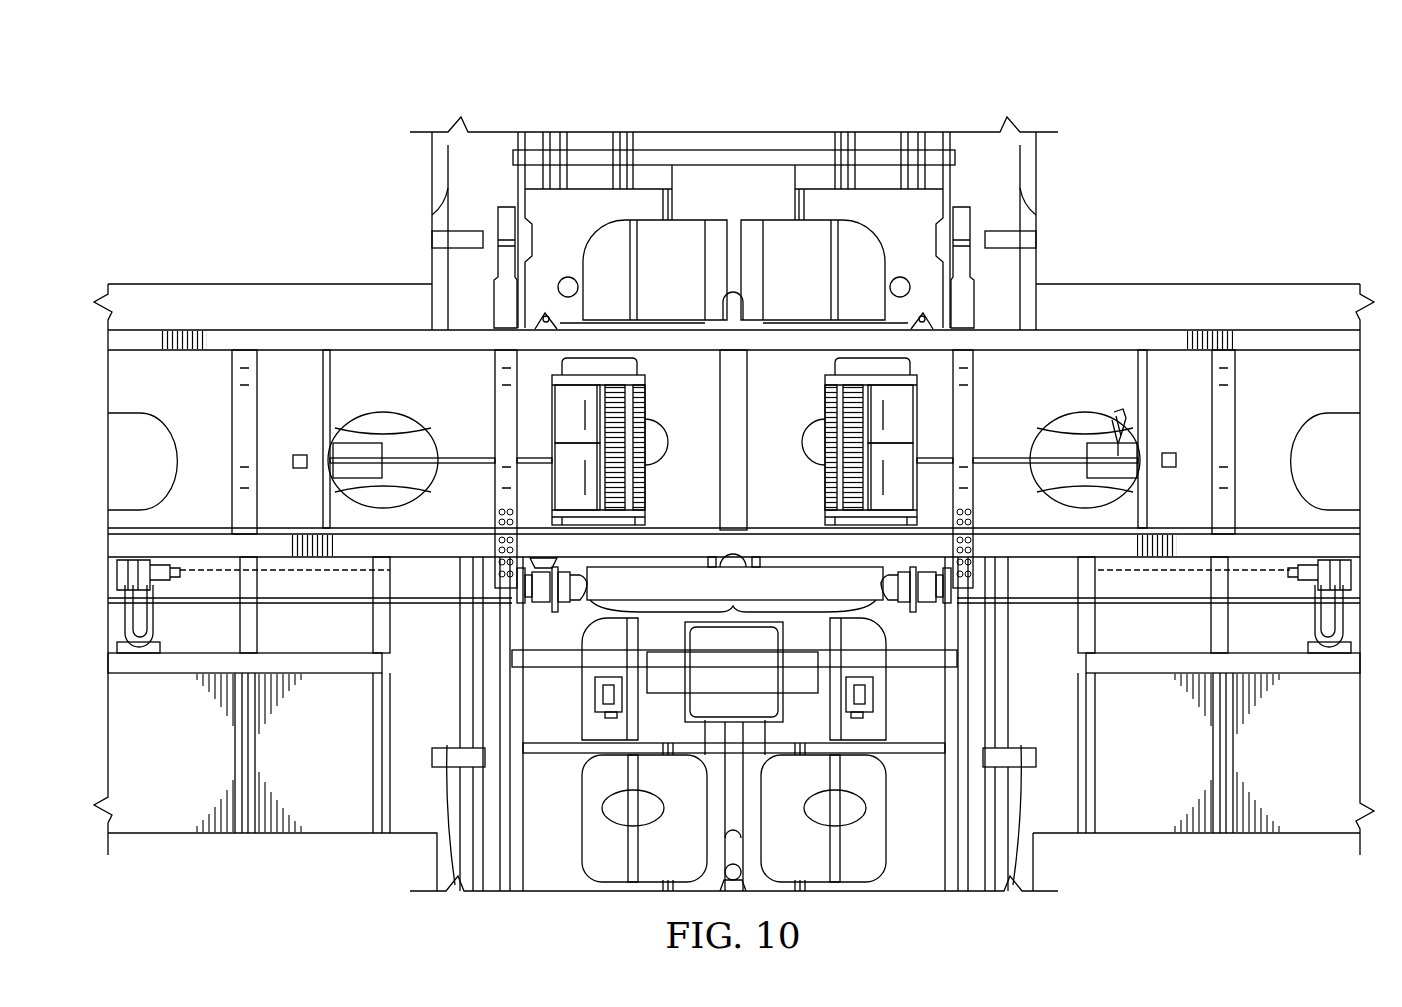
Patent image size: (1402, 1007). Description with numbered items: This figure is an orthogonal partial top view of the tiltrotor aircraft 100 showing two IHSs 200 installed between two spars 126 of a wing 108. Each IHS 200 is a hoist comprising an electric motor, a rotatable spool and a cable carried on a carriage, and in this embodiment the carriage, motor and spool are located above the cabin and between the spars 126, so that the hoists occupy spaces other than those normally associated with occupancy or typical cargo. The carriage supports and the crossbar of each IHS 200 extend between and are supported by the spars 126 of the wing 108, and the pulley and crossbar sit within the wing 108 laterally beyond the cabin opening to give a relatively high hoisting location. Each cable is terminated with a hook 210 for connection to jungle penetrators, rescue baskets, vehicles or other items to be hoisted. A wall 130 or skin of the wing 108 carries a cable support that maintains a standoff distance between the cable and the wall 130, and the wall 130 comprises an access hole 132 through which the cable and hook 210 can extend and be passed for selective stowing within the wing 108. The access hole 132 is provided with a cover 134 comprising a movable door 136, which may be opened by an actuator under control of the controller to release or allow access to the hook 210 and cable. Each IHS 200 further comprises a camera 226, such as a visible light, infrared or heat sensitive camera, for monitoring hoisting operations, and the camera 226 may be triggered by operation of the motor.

The tiltrotor aircraft 100 is at (566, 82).
The wing 108 is at (266, 293).
The spar 126 is at (219, 533).
The wall 130 is at (1172, 375).
The access hole 132 is at (385, 508).
The cover 134 is at (390, 437).
The movable door 136 is at (375, 452).
The IHS 200 is at (532, 418).
The hook 210 is at (1118, 410).
The camera 226 is at (300, 455).